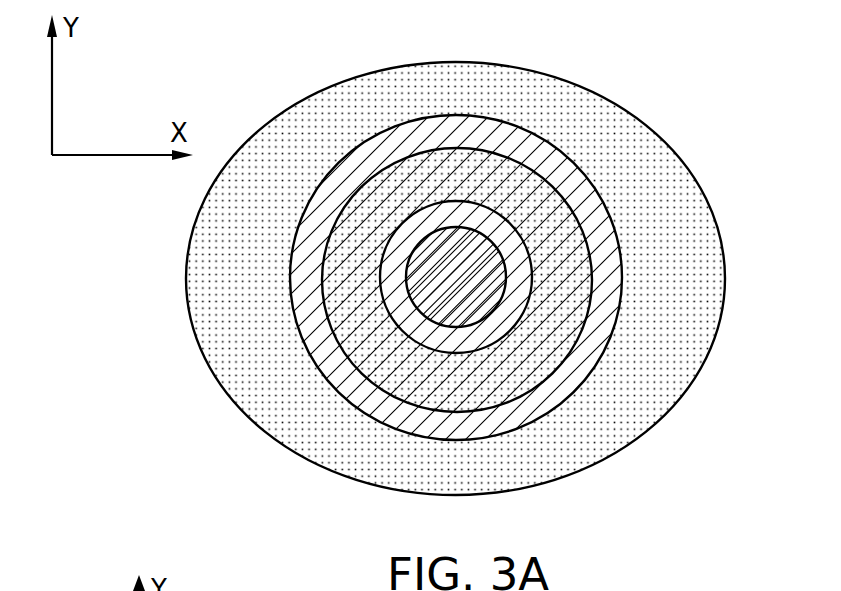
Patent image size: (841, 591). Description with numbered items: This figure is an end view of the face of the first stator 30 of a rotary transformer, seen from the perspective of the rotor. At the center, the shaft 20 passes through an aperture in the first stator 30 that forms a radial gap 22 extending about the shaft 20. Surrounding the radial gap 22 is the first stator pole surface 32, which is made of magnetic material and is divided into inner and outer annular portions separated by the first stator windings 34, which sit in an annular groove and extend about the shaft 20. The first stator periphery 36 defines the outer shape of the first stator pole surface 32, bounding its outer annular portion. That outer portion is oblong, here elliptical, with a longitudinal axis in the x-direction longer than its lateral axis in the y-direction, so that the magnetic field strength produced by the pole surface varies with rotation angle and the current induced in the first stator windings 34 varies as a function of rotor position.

The shaft 20 is at (453, 233).
The radial gap 22 is at (408, 322).
The first stator 30 is at (420, 256).
The first stator pole surface 32 is at (553, 243).
The first stator windings 34 is at (602, 285).
The first stator periphery 36 is at (228, 395).